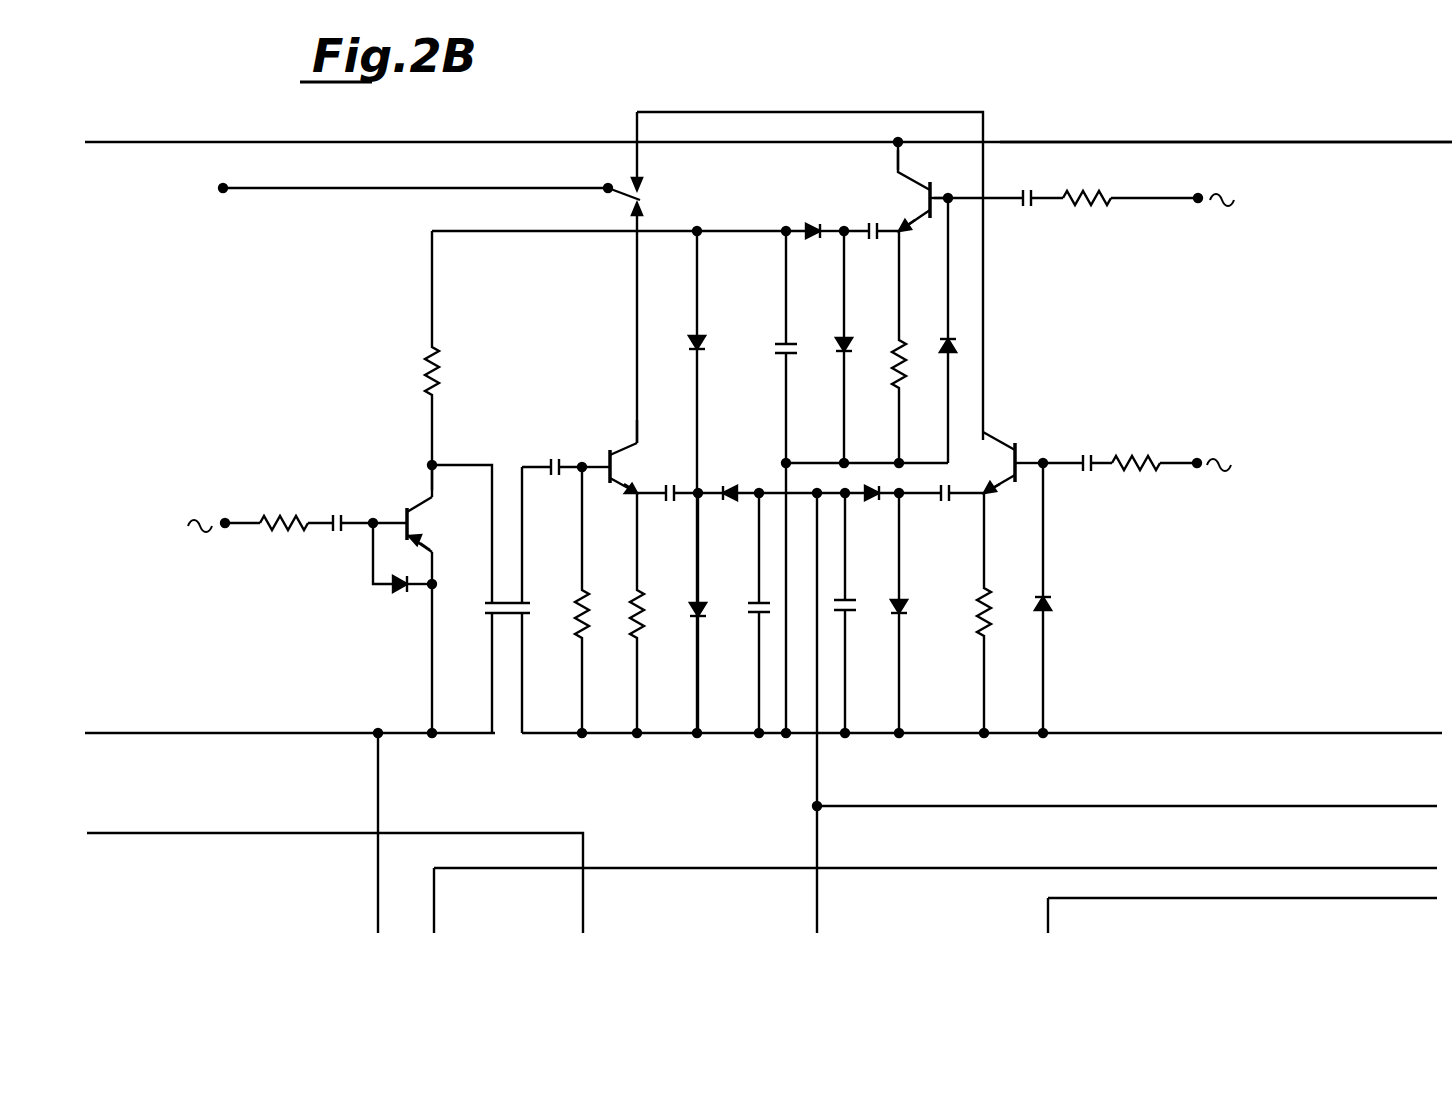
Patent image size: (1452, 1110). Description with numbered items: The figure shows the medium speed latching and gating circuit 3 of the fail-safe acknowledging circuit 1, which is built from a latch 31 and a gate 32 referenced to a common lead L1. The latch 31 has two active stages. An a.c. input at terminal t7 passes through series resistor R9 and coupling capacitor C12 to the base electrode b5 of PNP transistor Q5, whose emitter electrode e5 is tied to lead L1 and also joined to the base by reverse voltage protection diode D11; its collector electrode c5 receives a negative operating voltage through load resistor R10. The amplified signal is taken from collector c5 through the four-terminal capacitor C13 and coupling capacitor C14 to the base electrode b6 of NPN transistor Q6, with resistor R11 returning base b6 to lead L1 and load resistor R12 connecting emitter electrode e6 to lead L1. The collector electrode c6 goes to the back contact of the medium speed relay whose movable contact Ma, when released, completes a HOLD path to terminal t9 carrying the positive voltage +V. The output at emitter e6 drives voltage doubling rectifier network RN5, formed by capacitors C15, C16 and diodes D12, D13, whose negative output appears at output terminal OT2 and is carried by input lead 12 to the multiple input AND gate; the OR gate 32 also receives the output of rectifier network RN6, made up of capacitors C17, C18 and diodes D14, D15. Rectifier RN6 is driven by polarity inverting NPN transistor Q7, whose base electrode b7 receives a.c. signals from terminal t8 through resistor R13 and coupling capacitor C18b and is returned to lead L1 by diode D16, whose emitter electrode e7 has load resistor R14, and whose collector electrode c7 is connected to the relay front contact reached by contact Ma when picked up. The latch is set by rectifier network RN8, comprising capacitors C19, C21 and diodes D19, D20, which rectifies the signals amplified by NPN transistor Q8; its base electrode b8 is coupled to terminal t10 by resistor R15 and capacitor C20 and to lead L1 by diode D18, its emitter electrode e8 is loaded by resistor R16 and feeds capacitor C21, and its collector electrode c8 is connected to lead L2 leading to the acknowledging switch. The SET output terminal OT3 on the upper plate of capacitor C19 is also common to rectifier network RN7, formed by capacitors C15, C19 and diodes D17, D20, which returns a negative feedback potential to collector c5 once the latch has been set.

The acknowledging circuit 1 is at (1085, 133).
The latching and gating circuit 3 is at (790, 105).
The second d.c. input lead 12 is at (817, 770).
The latching circuit 31 is at (558, 437).
The gating circuit 32 is at (810, 605).
The common lead L1 is at (550, 738).
The lead L2 is at (1044, 140).
The movable contact Ma is at (646, 200).
The output terminal OT2 is at (806, 492).
The SET output terminal OT3 is at (788, 228).
The input terminal t7 is at (224, 528).
The input terminal t8 is at (1196, 468).
The terminal t9 is at (222, 194).
The input terminal t10 is at (1198, 198).
The PNP transistor Q5 is at (448, 535).
The NPN transistor Q6 is at (650, 477).
The NPN transistor Q7 is at (1005, 477).
The NPN transistor Q8 is at (918, 214).
The base electrode b5 is at (400, 522).
The collector electrode c5 is at (426, 504).
The emitter electrode e5 is at (420, 548).
The base electrode b6 is at (606, 458).
The collector electrode c6 is at (638, 446).
The emitter electrode e6 is at (622, 490).
The base electrode b7 is at (1022, 461).
The collector electrode c7 is at (991, 443).
The emitter electrode e7 is at (1000, 488).
The base electrode b8 is at (937, 200).
The collector electrode c8 is at (914, 186).
The emitter electrode e8 is at (925, 236).
The resistor R9 is at (288, 532).
The load resistor R10 is at (440, 355).
The resistor R11 is at (589, 590).
The load resistor R12 is at (645, 590).
The resistor R13 is at (1142, 454).
The load resistor R14 is at (991, 626).
The resistor R15 is at (1110, 200).
The load resistor R16 is at (896, 365).
The coupling capacitor C12 is at (348, 530).
The four-terminal capacitor C13 is at (490, 620).
The coupling capacitor C14 is at (570, 472).
The capacitor C15 is at (684, 498).
The capacitor C16 is at (758, 618).
The capacitor C17 is at (959, 498).
The capacitor C18 is at (848, 616).
The coupling capacitor C18b is at (1100, 468).
The capacitor C19 is at (784, 348).
The capacitor C20 is at (1040, 200).
The capacitor C21 is at (884, 235).
The reverse voltage protection diode D11 is at (404, 592).
The diode D12 is at (694, 620).
The diode D13 is at (738, 498).
The diode rectifier D14 is at (902, 602).
The diode rectifier D15 is at (862, 498).
The diode D16 is at (1048, 600).
The diode D17 is at (694, 340).
The diode D18 is at (944, 340).
The diode D19 is at (840, 350).
The diode D20 is at (804, 222).
The voltage doubling rectifier network RN5 is at (740, 585).
The voltage doubling rectifier network RN6 is at (886, 585).
The voltage doubling rectifier network RN7 is at (754, 461).
The voltage doubling rectifier network RN8 is at (886, 328).